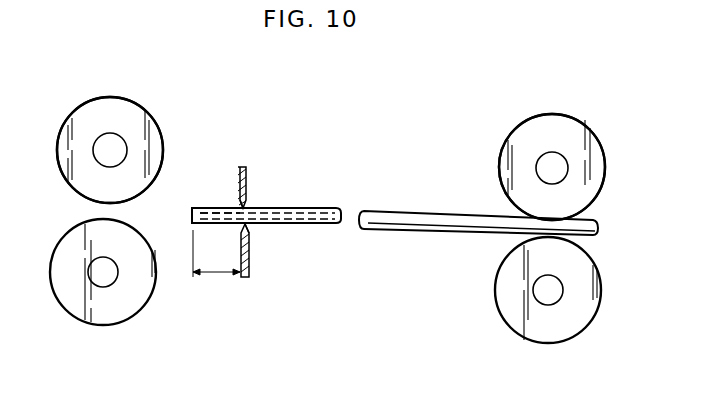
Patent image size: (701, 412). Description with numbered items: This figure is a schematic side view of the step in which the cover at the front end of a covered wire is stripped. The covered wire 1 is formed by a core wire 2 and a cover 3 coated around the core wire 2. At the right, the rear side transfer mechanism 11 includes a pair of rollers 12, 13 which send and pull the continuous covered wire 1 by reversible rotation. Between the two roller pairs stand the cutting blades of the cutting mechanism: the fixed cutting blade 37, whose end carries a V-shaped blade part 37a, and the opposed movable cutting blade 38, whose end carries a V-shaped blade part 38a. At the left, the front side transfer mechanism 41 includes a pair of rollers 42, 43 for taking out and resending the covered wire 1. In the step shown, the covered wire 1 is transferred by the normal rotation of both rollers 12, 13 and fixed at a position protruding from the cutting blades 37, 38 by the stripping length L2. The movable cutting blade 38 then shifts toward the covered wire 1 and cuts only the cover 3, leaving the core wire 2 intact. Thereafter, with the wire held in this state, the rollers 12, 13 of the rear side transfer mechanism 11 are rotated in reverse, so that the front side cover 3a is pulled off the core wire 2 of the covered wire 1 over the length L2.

The covered wire 1 is at (299, 208).
The core wire 2 is at (214, 227).
The cover 3 is at (427, 212).
The front side cover 3a is at (200, 207).
The rear side transfer mechanism 11 is at (575, 109).
The roller 12 is at (512, 141).
The roller 13 is at (510, 311).
The fixed cutting blade 37 is at (250, 270).
The V-shaped blade part 37a is at (249, 234).
The movable cutting blade 38 is at (246, 183).
The V-shaped blade part 38a is at (238, 203).
The front side transfer mechanism 41 is at (78, 94).
The roller 42 is at (140, 300).
The roller 43 is at (152, 134).
The stripping length L2 is at (216, 261).